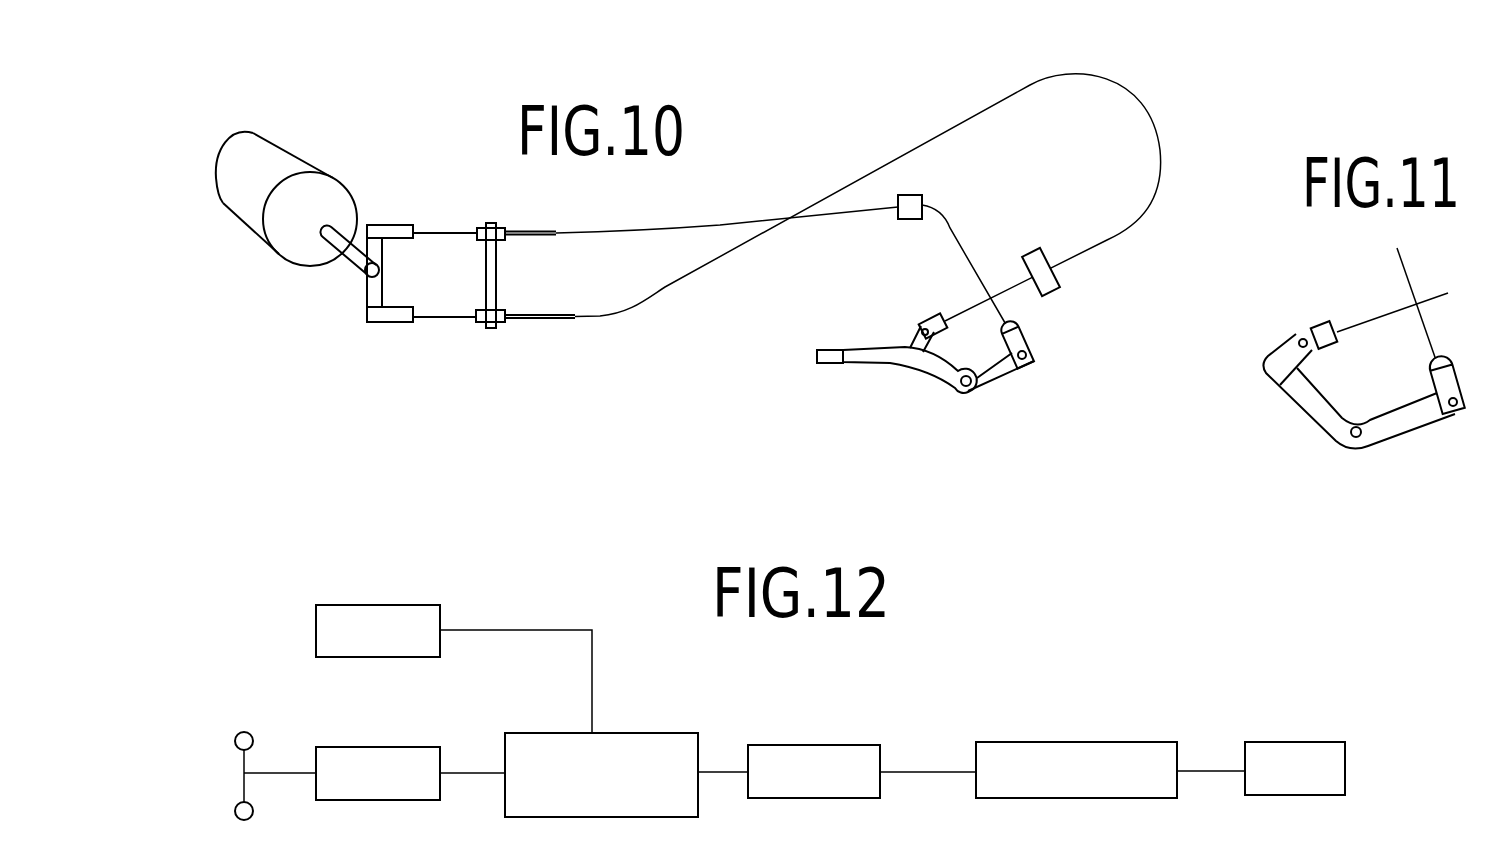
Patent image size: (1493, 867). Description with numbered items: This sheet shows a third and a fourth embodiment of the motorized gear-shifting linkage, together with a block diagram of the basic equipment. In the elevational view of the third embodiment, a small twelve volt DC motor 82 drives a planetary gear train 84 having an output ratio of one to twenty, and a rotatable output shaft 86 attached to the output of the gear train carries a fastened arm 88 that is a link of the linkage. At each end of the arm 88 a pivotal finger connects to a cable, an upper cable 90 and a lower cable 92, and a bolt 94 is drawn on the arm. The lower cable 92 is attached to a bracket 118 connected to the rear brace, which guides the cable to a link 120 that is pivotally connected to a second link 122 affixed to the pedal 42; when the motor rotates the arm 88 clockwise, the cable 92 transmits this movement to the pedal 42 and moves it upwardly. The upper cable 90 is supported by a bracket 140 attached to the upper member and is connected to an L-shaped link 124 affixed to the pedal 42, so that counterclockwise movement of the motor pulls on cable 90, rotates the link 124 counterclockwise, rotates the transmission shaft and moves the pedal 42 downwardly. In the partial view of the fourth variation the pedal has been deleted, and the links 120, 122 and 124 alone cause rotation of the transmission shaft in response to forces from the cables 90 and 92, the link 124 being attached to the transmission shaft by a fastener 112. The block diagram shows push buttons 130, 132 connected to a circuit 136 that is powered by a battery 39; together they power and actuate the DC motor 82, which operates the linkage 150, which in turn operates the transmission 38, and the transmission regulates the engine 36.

In FIG. 10, the DC motor 82 is at (290, 162).
In FIG. 12, the DC motor 82 is at (622, 742).
In FIG. 10, the planetary gear train 84 is at (313, 187).
In FIG. 10, the output shaft 86 is at (335, 240).
In FIG. 10, the arm 88 is at (378, 248).
In FIG. 10, the upper cable 90 is at (537, 233).
In FIG. 11, the upper cable 90 is at (1410, 282).
In FIG. 10, the lower cable 92 is at (548, 317).
In FIG. 11, the lower cable 92 is at (1377, 317).
In FIG. 10, the bolt 94 is at (488, 277).
In FIG. 10, the bracket 140 is at (917, 195).
In FIG. 10, the bracket 118 is at (1035, 250).
In FIG. 10, the link 120 is at (928, 318).
In FIG. 11, the link 120 is at (1312, 323).
In FIG. 10, the second link 122 is at (910, 347).
In FIG. 11, the second link 122 is at (1278, 360).
In FIG. 10, the pedal 42 is at (858, 350).
In FIG. 10, the L-shaped link 124 is at (998, 366).
In FIG. 11, the L-shaped link 124 is at (1427, 410).
In FIG. 10, the fastener 112 is at (965, 388).
In FIG. 11, the fastener 112 is at (1353, 438).
In FIG. 12, the battery 39 is at (408, 613).
In FIG. 12, the circuit 136 is at (345, 796).
In FIG. 12, the linkage 150 is at (782, 750).
In FIG. 12, the transmission 38 is at (1012, 750).
In FIG. 12, the engine 36 is at (1258, 745).
In FIG. 12, the push button 130 is at (244, 732).
In FIG. 12, the push button 132 is at (240, 820).